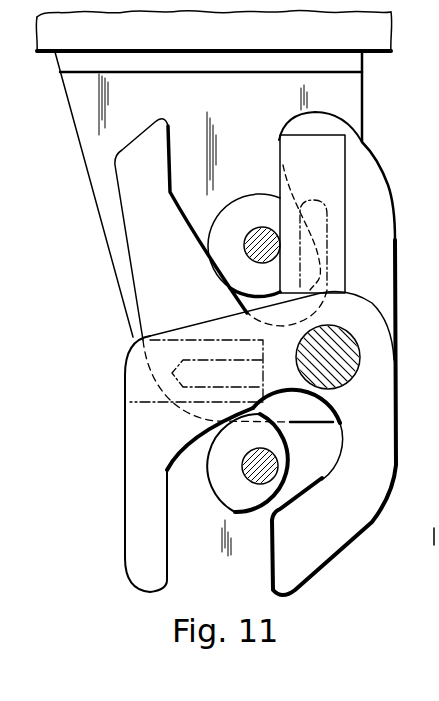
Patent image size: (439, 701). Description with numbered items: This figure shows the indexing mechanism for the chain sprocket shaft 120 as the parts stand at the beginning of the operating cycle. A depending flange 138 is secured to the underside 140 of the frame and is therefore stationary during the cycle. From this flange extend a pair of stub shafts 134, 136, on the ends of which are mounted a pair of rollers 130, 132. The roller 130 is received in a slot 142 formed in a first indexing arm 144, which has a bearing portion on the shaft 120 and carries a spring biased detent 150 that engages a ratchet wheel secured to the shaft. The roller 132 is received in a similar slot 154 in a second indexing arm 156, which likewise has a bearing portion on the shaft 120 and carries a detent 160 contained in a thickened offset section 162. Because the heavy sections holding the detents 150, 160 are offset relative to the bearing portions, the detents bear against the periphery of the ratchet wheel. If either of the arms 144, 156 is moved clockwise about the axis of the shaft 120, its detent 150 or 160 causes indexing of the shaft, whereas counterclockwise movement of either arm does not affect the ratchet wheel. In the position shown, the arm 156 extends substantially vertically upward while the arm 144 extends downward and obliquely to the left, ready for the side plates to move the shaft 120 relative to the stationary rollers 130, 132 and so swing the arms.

The shaft 120 is at (340, 343).
The roller 130 is at (282, 492).
The roller 132 is at (253, 202).
The stub shaft 134 is at (270, 452).
The stub shaft 136 is at (248, 248).
The depending flange 138 is at (349, 105).
The underside of the frame 140 is at (377, 54).
The slot 142 is at (322, 482).
The first indexing arm 144 is at (383, 407).
The spring biased detent 150 is at (190, 398).
The slot 154 is at (198, 226).
The indexing arm 156 is at (367, 185).
The detent 160 is at (327, 218).
The thickened offset section 162 is at (334, 153).